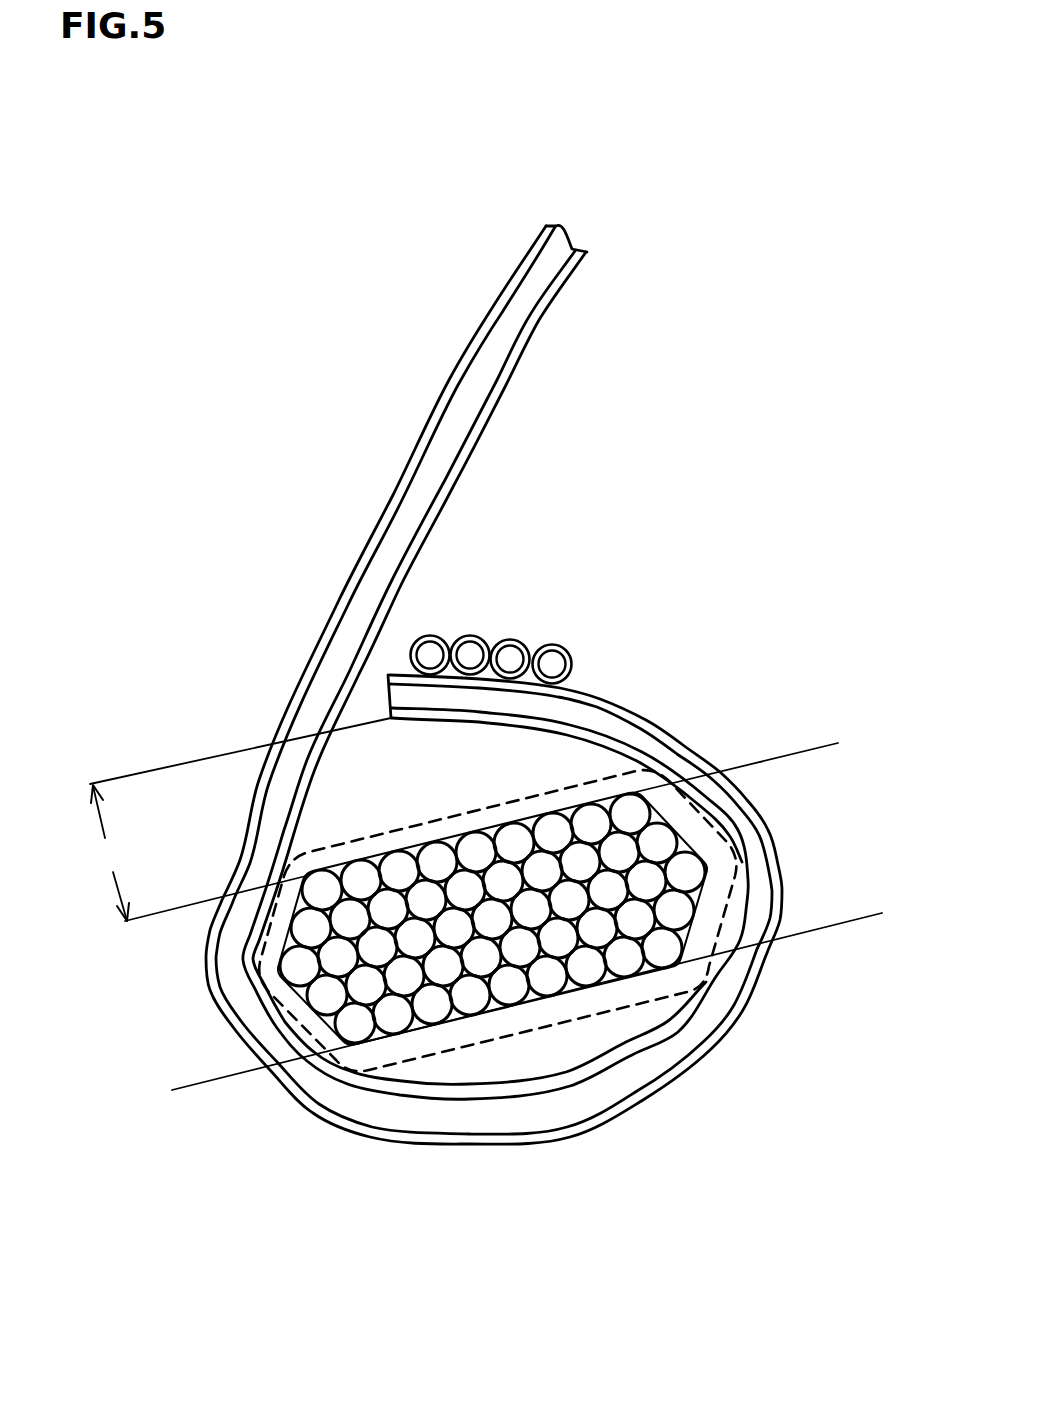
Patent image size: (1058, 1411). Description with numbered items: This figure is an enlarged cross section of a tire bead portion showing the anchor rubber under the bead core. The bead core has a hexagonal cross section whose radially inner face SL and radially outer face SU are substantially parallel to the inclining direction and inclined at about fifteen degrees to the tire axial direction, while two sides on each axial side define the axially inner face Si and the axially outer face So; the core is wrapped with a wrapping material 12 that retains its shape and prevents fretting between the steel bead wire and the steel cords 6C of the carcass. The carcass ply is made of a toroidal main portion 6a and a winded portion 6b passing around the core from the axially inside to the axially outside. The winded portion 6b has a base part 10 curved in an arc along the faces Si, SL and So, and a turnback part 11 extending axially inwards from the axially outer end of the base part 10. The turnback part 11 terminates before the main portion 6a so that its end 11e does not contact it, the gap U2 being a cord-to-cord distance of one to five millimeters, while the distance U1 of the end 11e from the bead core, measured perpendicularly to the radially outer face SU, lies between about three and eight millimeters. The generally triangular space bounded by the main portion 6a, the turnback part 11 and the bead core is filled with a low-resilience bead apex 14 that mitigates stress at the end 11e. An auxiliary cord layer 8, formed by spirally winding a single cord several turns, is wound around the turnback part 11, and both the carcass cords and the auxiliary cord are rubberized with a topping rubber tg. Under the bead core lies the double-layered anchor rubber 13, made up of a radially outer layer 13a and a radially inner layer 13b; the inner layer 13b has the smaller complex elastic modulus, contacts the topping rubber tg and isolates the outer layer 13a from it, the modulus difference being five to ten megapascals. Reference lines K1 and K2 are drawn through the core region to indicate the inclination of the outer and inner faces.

The main portion 6a is at (462, 333).
The winded portion 6b is at (780, 828).
The steel cords 6C is at (532, 1113).
The auxiliary cord layer 8 is at (570, 632).
The base part 10 is at (713, 1048).
The turnback part 11 is at (647, 708).
The end of the turnback part 11e is at (388, 685).
The wrapping material 12 is at (310, 1023).
The anchor rubber 13 is at (812, 1243).
The radially outer layer 13a is at (570, 1037).
The radially inner layer 13b is at (577, 1070).
The bead apex 14 is at (520, 757).
The line K1 is at (820, 745).
The line K2 is at (880, 913).
The distance U1 is at (240, 819).
The gap U2 is at (385, 679).
The radially outer face SU is at (346, 860).
The radially inner face SL is at (420, 1035).
The axially inner face Si is at (283, 992).
The axially outer face So is at (715, 887).
The topping rubber tg is at (485, 1105).